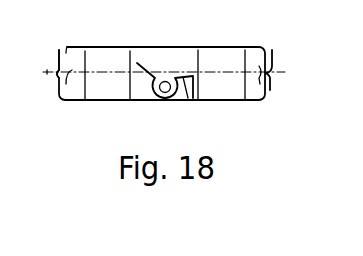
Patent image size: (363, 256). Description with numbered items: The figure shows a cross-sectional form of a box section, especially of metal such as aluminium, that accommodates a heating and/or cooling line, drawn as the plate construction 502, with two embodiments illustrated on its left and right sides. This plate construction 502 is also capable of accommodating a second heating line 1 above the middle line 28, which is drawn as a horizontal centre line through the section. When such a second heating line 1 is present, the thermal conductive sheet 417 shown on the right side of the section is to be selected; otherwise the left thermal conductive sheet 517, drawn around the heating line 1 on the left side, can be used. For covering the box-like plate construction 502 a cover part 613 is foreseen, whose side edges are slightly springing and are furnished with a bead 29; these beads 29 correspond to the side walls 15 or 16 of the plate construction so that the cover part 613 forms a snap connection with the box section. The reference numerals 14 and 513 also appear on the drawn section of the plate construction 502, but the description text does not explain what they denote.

The heating line 1 is at (170, 93).
The partition walls 14 is at (128, 88).
The side wall 15 is at (59, 50).
The side wall 16 is at (272, 48).
The middle line 28 is at (47, 72).
The bead 29 is at (68, 70).
The thermal conductive sheet 417 is at (189, 100).
The plate construction 502 is at (55, 97).
The wall 513 is at (234, 101).
The thermal conductive sheet 517 is at (137, 63).
The cover part 613 is at (178, 46).